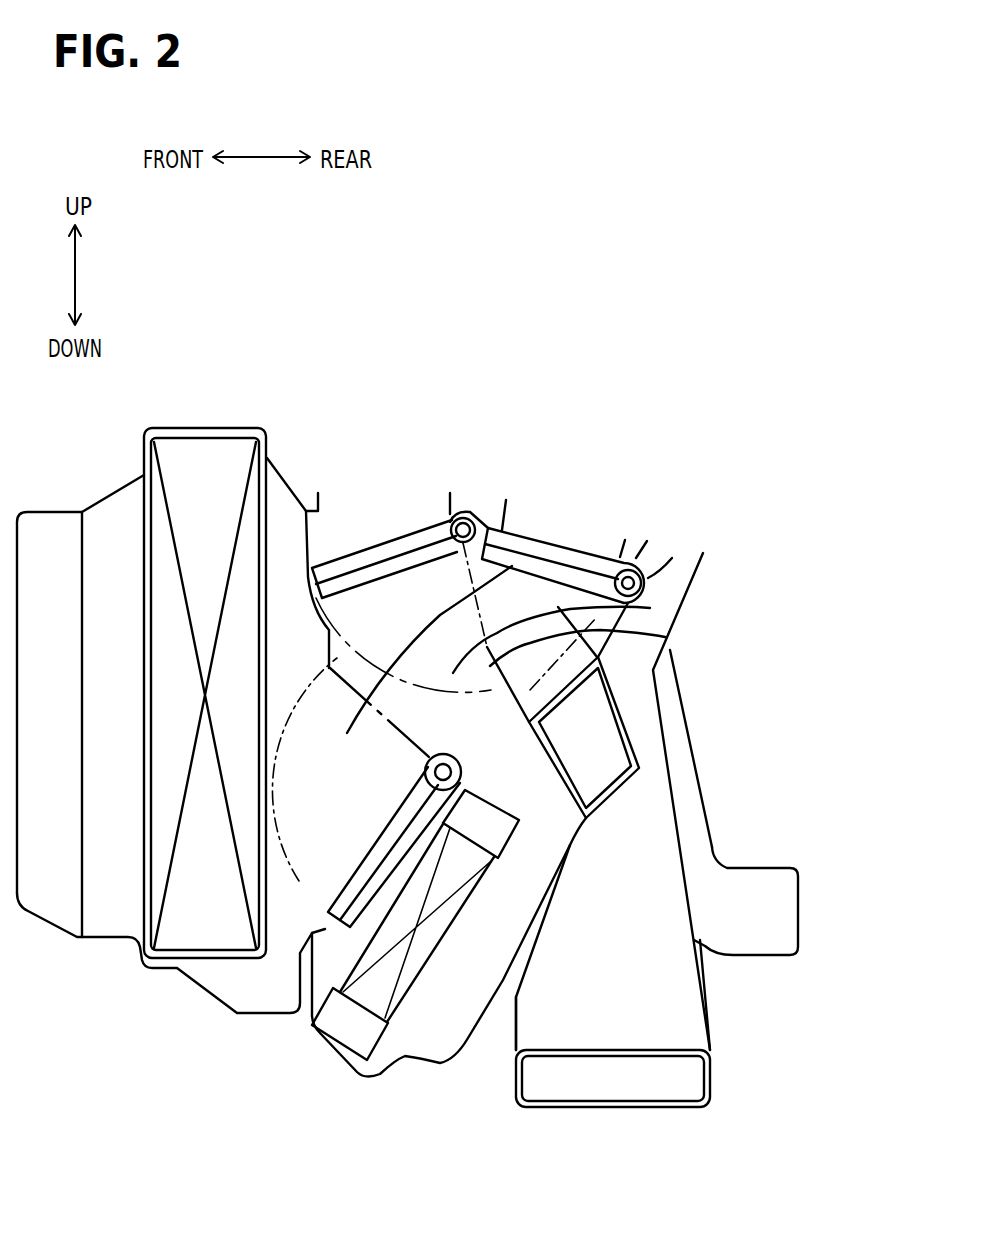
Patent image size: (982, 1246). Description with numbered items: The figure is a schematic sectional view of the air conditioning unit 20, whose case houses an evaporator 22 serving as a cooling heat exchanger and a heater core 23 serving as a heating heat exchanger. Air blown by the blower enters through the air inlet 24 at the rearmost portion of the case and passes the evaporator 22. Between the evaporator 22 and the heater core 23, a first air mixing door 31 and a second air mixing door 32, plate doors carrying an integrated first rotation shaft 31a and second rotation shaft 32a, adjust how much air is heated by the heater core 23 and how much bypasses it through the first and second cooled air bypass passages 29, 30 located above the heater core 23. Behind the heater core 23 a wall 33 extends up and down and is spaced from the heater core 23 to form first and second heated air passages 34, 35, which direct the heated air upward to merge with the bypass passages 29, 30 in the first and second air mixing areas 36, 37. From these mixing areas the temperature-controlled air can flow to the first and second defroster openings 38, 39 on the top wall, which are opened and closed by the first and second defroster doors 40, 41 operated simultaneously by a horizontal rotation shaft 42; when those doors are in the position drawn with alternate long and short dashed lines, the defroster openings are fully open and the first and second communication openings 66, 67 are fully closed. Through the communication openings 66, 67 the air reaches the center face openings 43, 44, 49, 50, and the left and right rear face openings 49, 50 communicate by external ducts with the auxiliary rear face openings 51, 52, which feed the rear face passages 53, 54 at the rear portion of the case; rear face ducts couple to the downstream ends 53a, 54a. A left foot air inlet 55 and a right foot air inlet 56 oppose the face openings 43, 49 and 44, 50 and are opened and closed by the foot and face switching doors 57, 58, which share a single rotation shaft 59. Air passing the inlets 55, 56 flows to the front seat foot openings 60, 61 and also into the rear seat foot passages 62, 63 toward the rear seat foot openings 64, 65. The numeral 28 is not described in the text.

The air conditioning unit 20 is at (403, 462).
The evaporator 22 is at (200, 500).
The heater core 23 is at (503, 828).
The air inlet 24 is at (62, 783).
The bracket 28 is at (110, 663).
The first cooled air bypass passage 29 is at (532, 494).
The second cooled air bypass passage 30 is at (510, 545).
The first air mixing door 31 is at (264, 902).
The second air mixing door 32 is at (369, 853).
The first rotation shaft 31a is at (643, 757).
The second rotation shaft 32a is at (462, 773).
The wall 33 is at (516, 955).
The first heated air passage 34 is at (415, 975).
The second heated air passage 35 is at (493, 927).
The first air mixing area 36 is at (636, 622).
The second air mixing area 37 is at (650, 608).
The first defroster opening 38 is at (378, 514).
The second defroster opening 39 is at (365, 525).
The first defroster door 40 is at (444, 439).
The second defroster door 41 is at (418, 543).
The rotation shaft 42 is at (475, 514).
The left center face opening 43 is at (603, 490).
The right center face opening 44 is at (603, 490).
The left rear face opening 49 is at (603, 490).
The right rear face opening 50 is at (553, 530).
The auxiliary rear face opening 51 is at (711, 536).
The auxiliary rear face opening 52 is at (680, 565).
The rear face passage 53 is at (741, 801).
The rear face passage 54 is at (673, 783).
The downstream end of rear face passage 53a is at (795, 891).
The downstream end of rear face passage 54a is at (795, 891).
The left foot air inlet 55 is at (674, 731).
The right foot air inlet 56 is at (562, 692).
The foot and face switching door 57 is at (622, 516).
The foot and face switching door 58 is at (562, 548).
The rotation shaft 59 is at (672, 558).
The front seat foot opening 60 is at (679, 738).
The front seat foot opening 61 is at (592, 727).
The rear seat foot passage 62 is at (675, 964).
The rear seat foot passage 63 is at (617, 878).
The rear seat foot opening 64 is at (675, 1078).
The rear seat foot opening 65 is at (640, 1080).
The first communication opening 66 is at (655, 637).
The second communication opening 67 is at (665, 637).